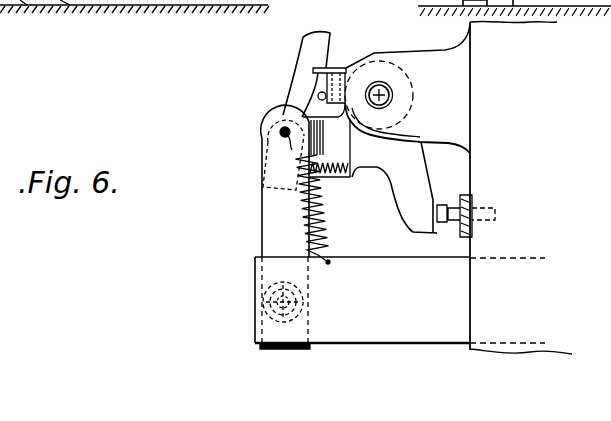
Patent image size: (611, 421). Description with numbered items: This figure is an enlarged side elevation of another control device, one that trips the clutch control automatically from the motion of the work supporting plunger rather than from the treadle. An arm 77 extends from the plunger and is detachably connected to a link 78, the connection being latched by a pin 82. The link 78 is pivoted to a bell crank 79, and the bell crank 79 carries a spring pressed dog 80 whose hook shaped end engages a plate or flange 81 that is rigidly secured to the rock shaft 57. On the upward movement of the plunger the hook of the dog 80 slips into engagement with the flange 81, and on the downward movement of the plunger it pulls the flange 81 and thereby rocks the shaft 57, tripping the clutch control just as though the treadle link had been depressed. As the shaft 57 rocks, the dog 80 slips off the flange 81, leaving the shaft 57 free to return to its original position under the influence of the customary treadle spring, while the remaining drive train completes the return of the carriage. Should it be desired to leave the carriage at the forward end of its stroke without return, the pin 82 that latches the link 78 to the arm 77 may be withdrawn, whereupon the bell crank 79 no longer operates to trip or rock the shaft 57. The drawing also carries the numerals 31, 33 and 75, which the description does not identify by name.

The support 31 is at (9, 24).
The beam 33 is at (67, 0).
The rock shaft 57 is at (385, 96).
The base block 75 is at (470, 307).
The arm 77 is at (437, 276).
The link 78 is at (270, 235).
The bell crank 79 is at (397, 190).
The spring pressed dog 80 is at (286, 99).
The plate 81 is at (326, 75).
The pin 82 is at (268, 303).